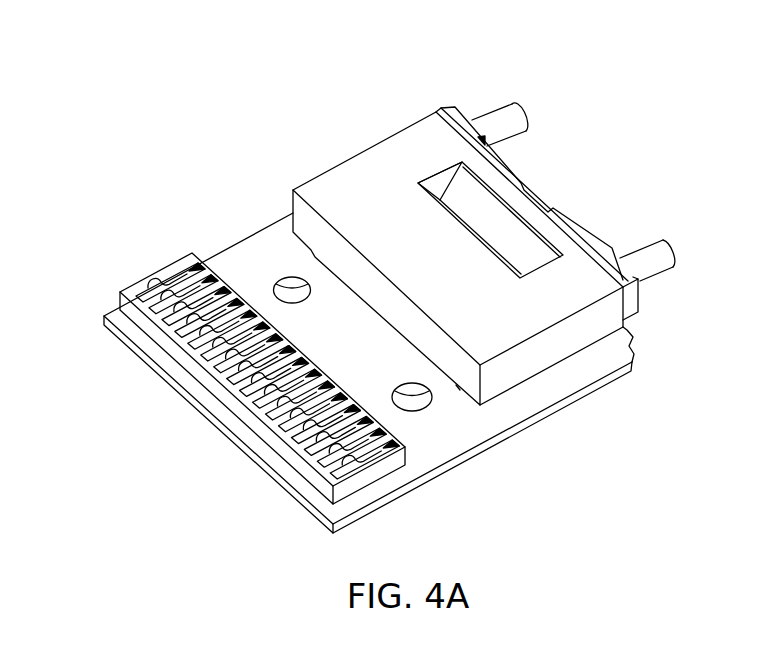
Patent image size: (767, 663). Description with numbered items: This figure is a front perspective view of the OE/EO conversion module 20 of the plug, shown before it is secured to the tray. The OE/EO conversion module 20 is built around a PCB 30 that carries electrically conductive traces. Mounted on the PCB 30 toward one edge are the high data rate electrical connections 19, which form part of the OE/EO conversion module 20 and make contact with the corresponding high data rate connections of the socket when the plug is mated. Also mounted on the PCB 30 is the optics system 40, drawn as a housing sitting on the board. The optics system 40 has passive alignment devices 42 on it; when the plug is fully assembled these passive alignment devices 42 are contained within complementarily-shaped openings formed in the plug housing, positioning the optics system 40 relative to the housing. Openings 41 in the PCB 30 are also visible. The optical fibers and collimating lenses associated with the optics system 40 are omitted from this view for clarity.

The OE/EO conversion module 20 is at (410, 84).
The high data rate electrical connections 19 is at (179, 299).
The PCB 30 is at (573, 393).
The optics system 40 is at (354, 176).
The mounting holes 41 is at (410, 385).
The passive alignment devices 42 is at (519, 99).